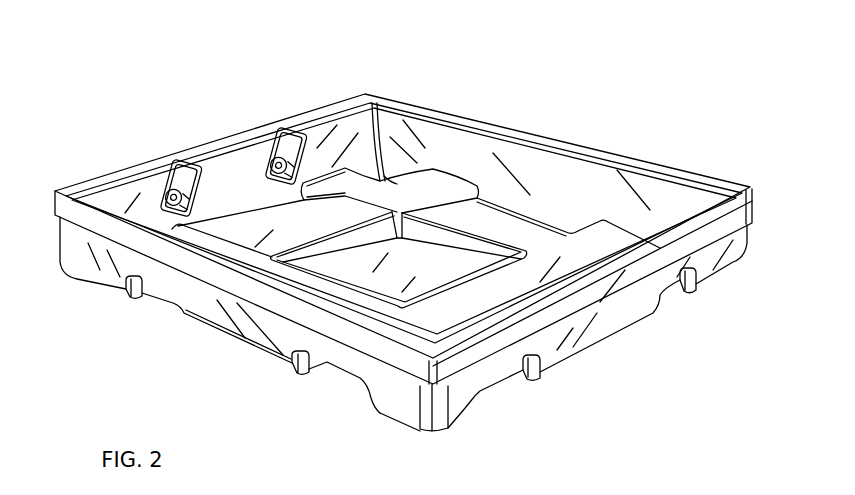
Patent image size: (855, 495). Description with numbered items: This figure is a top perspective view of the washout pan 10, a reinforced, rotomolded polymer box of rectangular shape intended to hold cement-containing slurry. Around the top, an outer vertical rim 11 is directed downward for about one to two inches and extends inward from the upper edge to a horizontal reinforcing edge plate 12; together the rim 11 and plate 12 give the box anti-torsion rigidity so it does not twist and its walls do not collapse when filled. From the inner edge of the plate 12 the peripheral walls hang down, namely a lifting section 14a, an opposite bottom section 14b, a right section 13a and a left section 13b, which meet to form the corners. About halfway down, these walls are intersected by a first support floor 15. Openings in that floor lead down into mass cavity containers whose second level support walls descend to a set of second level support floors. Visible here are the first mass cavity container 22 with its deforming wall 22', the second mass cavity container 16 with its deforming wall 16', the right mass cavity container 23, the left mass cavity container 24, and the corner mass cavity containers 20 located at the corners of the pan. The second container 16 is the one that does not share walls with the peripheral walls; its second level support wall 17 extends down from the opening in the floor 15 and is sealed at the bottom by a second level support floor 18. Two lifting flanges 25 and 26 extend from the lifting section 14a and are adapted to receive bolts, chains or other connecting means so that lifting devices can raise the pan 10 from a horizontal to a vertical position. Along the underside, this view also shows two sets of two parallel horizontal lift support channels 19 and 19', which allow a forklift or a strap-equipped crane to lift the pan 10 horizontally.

The washout pan 10 is at (633, 332).
The outer vertical rim 11 is at (725, 218).
The horizontal reinforcing edge plate 12 is at (702, 168).
The right section 13a is at (620, 166).
The left section 13b is at (217, 315).
The lifting section 14a is at (147, 193).
The bottom section 14b is at (598, 330).
The first support floor 15 is at (556, 257).
The second mass cavity container 16 is at (399, 173).
The deforming wall 16' is at (361, 155).
The second level support wall 17 is at (445, 270).
The second level support floor 18 is at (378, 230).
The lift support channel 19 is at (640, 366).
The lift support channel 19' is at (194, 383).
The corner mass cavity container 20 is at (93, 263).
The first mass cavity container 22 is at (222, 142).
The deforming wall 22' is at (241, 161).
The right mass cavity container 23 is at (520, 212).
The left mass cavity container 24 is at (257, 347).
The lifting flange 25 is at (286, 155).
The lifting flange 26 is at (180, 185).